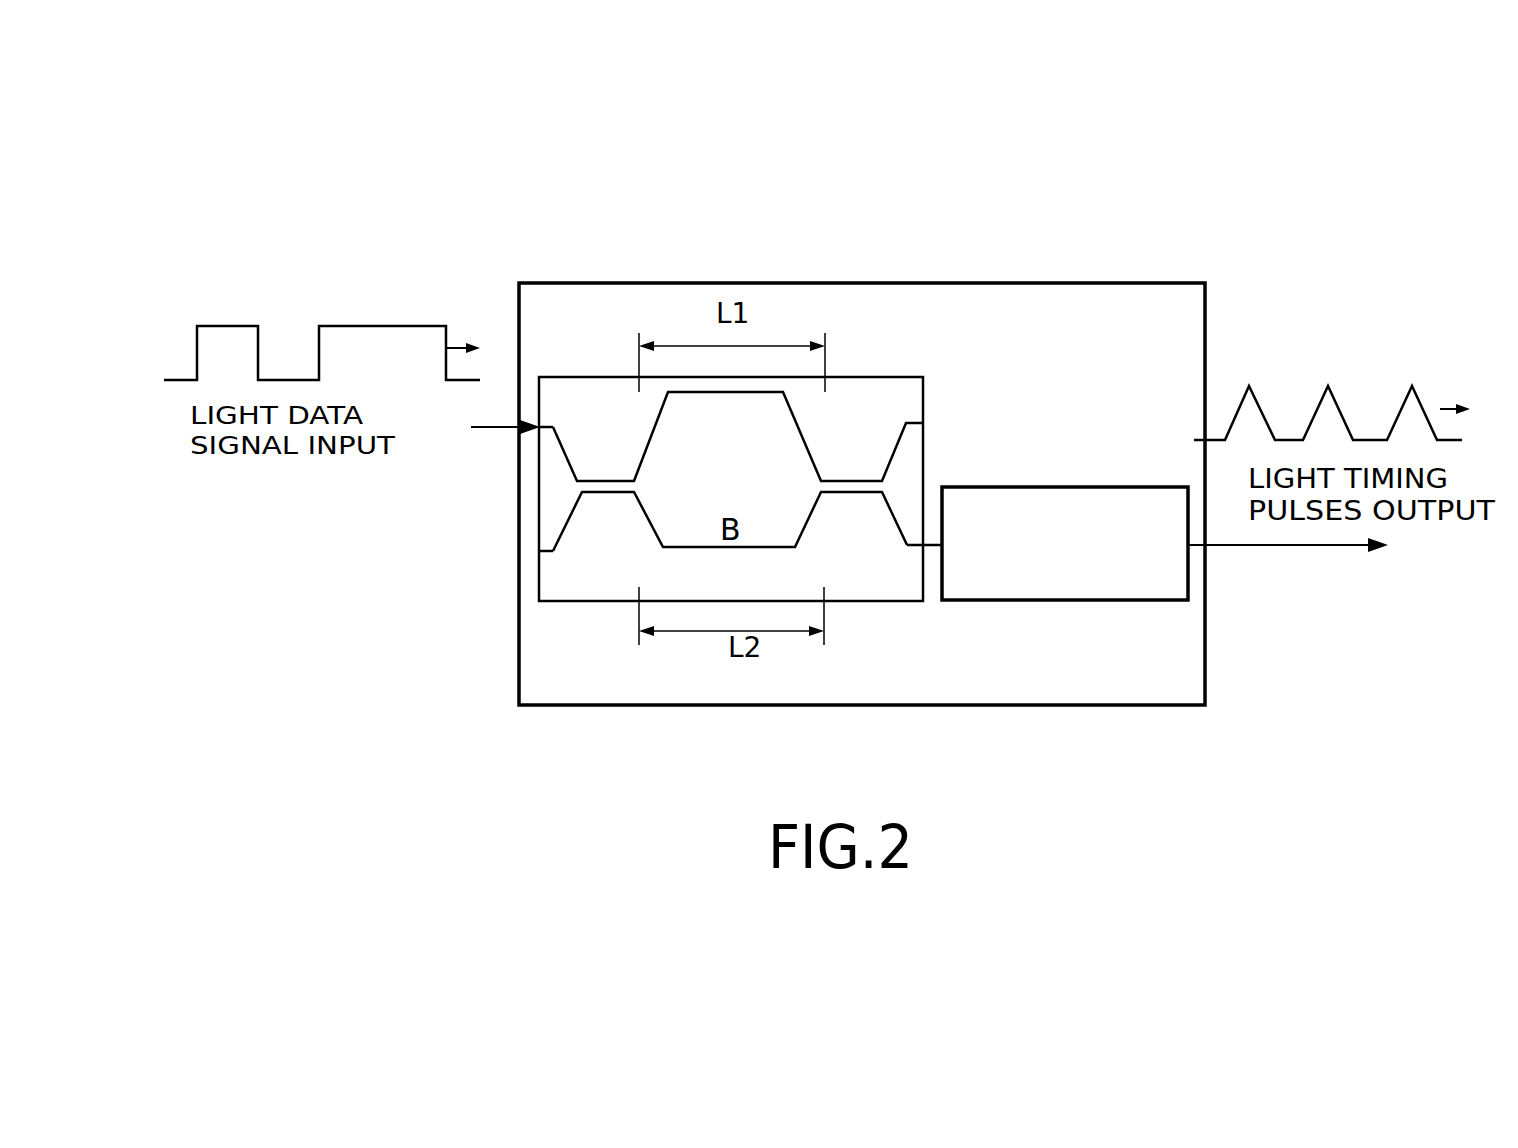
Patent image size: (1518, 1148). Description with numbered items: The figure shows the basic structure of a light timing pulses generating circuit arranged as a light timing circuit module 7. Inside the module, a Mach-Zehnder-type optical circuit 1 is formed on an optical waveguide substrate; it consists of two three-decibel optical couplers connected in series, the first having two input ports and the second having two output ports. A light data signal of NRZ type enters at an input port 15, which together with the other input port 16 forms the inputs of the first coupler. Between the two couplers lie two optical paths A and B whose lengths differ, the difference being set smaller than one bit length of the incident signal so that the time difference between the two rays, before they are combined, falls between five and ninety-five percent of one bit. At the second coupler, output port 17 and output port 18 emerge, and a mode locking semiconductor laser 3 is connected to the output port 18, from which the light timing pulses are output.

The light timing circuit module 7 is at (1025, 283).
The Mach-Zehnder-type optical circuit 1 is at (923, 385).
The output port 17 is at (923, 423).
The input port 15 is at (530, 432).
The input port 16 is at (539, 551).
The output port 18 is at (938, 548).
The mode locking semiconductor laser 3 is at (1028, 600).